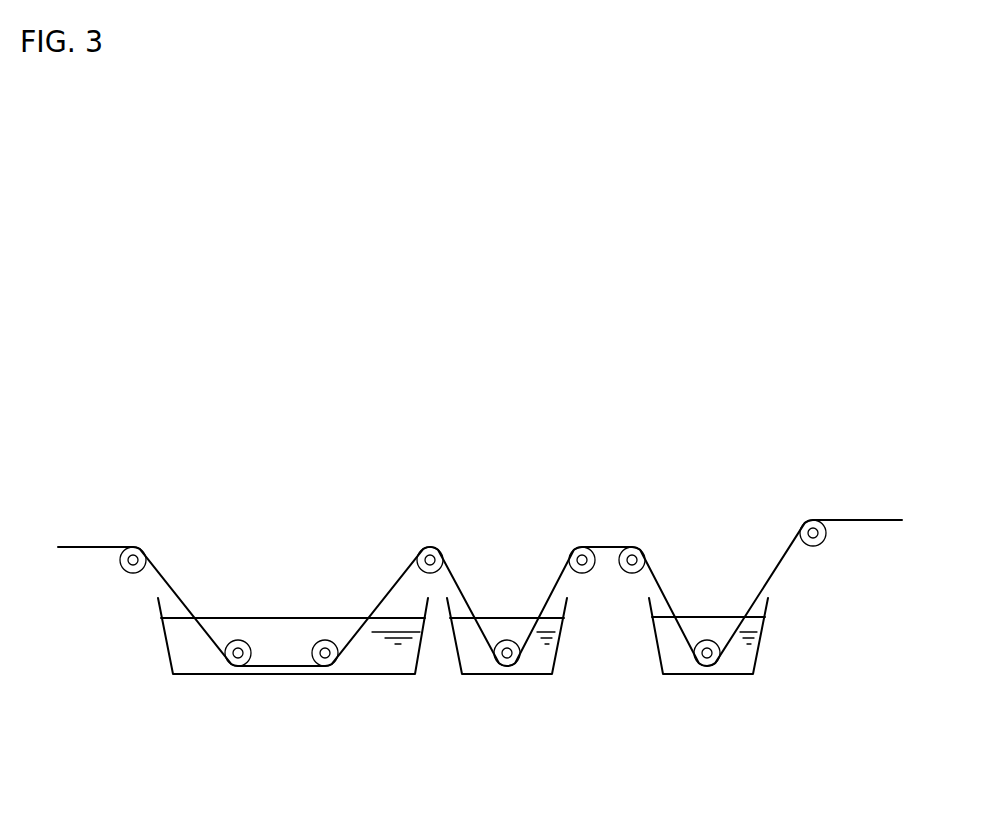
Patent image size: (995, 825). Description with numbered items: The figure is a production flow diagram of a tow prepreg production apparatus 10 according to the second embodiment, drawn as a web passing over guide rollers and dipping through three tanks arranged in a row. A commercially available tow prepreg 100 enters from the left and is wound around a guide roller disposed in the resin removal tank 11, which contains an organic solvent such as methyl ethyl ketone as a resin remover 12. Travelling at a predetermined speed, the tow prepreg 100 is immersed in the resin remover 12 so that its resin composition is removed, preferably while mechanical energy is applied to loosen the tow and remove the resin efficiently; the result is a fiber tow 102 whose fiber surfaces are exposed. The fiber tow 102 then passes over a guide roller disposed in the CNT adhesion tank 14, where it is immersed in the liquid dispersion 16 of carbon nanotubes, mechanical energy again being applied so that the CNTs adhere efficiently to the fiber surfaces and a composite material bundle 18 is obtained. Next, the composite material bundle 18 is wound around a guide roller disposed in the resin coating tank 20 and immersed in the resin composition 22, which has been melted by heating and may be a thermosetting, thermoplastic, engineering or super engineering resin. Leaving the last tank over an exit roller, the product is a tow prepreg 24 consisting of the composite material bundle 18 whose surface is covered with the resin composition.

The tow prepreg production apparatus 10 is at (780, 416).
The tow prepreg 100 is at (82, 542).
The fiber tow 102 is at (397, 570).
The composite material bundle 18 is at (553, 568).
The tow prepreg 24 is at (852, 518).
The resin removal tank 11 is at (207, 677).
The resin remover 12 is at (183, 647).
The CNT adhesion tank 14 is at (495, 677).
The liquid dispersion 16 is at (473, 655).
The resin coating tank 20 is at (732, 677).
The resin composition 22 is at (675, 655).